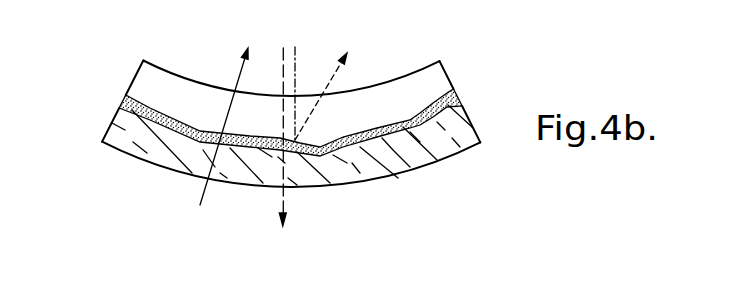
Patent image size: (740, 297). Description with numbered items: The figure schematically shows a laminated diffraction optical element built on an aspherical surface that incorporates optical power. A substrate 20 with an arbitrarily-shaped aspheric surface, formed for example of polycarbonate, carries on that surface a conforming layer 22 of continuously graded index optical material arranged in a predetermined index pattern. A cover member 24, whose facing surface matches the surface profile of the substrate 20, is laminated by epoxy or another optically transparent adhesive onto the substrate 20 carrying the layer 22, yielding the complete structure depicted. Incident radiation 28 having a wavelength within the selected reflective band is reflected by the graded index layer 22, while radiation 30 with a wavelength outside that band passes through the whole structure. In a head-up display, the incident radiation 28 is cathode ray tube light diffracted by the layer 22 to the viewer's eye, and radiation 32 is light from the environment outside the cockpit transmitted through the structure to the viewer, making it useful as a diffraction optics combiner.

The substrate 20 is at (157, 148).
The layer 22 is at (390, 128).
The cover member 24 is at (428, 87).
The incident radiation 28 is at (295, 60).
The radiation 30 is at (283, 60).
The radiation 32 is at (241, 68).